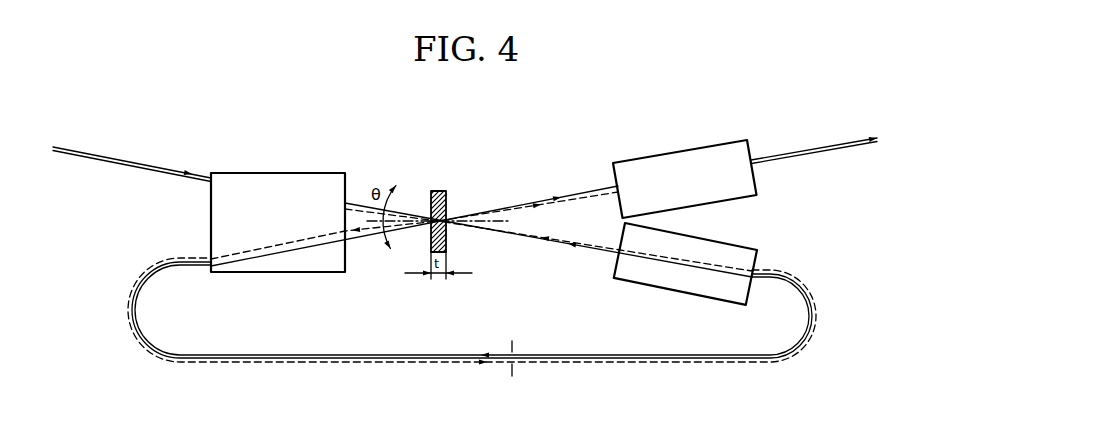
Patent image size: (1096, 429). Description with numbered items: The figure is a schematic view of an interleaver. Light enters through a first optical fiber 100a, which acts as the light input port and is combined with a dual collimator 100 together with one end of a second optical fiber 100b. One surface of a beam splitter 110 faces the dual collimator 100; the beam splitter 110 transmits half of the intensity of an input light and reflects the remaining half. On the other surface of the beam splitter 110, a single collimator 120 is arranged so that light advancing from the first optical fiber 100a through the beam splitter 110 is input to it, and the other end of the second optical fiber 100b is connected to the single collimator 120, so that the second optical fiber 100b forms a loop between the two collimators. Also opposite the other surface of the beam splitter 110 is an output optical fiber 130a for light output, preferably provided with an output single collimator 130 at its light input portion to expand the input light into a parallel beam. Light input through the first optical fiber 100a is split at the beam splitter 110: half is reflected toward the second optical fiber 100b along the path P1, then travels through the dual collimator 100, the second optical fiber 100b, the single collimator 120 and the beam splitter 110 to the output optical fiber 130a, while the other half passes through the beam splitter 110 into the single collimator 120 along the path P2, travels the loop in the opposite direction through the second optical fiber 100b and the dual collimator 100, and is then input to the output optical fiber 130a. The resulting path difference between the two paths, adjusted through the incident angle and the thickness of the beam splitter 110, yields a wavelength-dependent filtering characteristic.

The dual collimator 100 is at (279, 180).
The first optical fiber 100a is at (142, 172).
The second optical fiber 100b is at (163, 268).
The beam splitter 110 is at (439, 190).
The single collimator 120 is at (748, 258).
The output single collimator 130 is at (748, 183).
The output optical fiber 130a is at (803, 155).
The path P1 is at (513, 381).
The path P2 is at (513, 337).